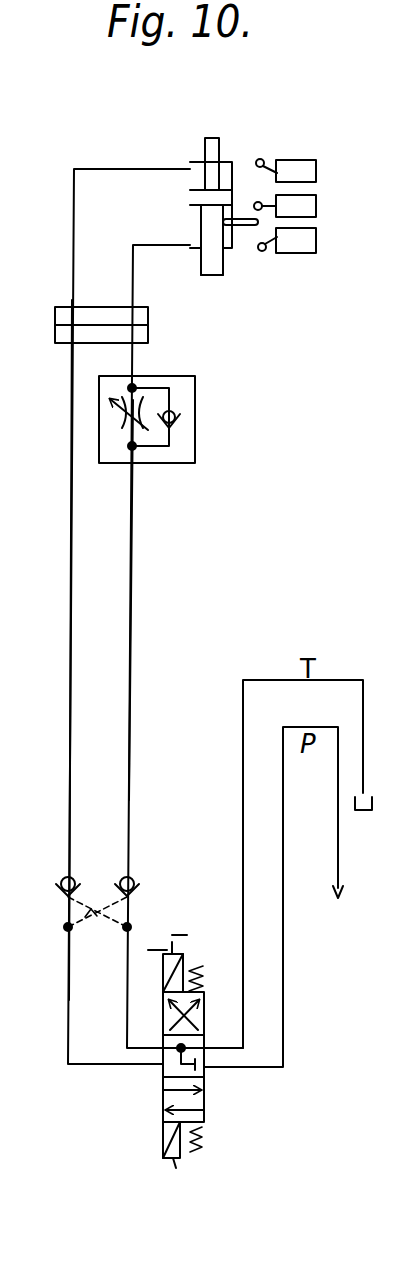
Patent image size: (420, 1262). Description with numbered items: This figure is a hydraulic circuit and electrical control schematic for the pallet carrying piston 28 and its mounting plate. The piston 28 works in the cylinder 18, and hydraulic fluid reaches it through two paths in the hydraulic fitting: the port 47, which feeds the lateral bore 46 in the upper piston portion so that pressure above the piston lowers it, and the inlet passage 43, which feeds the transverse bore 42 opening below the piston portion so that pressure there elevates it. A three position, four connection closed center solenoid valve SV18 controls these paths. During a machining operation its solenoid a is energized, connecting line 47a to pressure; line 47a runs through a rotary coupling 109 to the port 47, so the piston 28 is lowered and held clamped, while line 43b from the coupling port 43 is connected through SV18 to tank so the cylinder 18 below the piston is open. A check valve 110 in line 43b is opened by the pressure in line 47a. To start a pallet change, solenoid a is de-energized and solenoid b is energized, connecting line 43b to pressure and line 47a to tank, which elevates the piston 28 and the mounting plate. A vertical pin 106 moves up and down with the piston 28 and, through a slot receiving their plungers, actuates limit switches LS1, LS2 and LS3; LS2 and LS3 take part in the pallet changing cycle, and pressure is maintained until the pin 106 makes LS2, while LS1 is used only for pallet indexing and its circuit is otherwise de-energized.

The port 47 is at (73, 187).
The lateral bore 46 is at (110, 592).
The line 47a is at (72, 675).
The inlet passage 43 is at (132, 280).
The transverse bore 42 is at (191, 646).
The line 43b is at (130, 565).
The cylinder 18 is at (195, 165).
The piston 28 is at (213, 267).
The vertical pin 106 is at (244, 217).
The rotary coupling 109 is at (148, 317).
The check valve 110 is at (136, 882).
The limit switch LS1 is at (316, 207).
The limit switch LS2 is at (312, 168).
The limit switch LS3 is at (312, 243).
The solenoid valve SV18 is at (205, 1103).